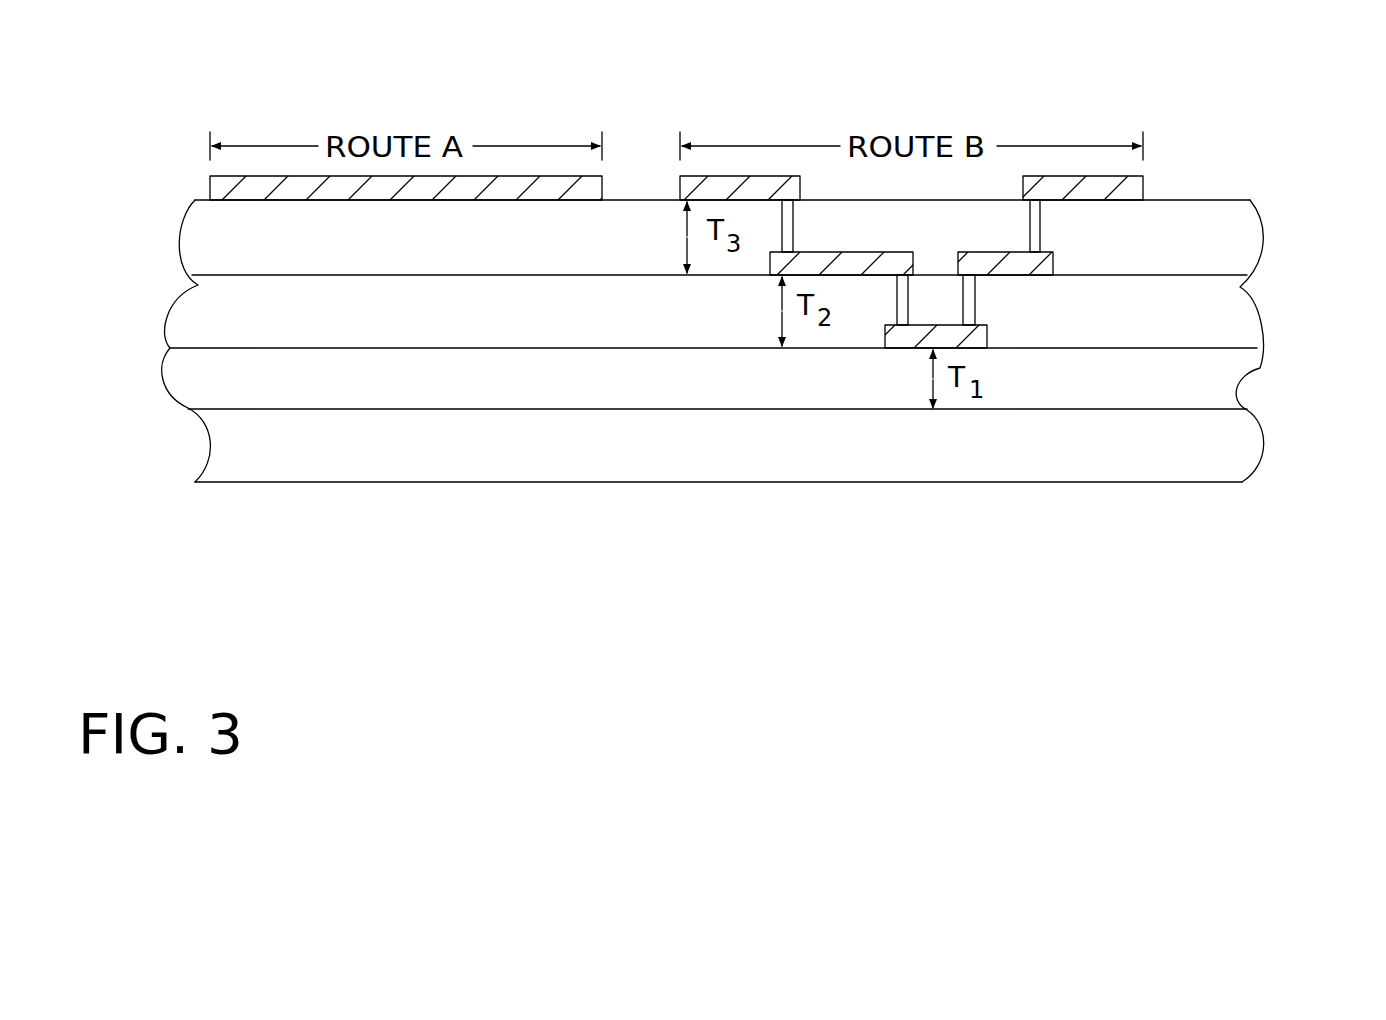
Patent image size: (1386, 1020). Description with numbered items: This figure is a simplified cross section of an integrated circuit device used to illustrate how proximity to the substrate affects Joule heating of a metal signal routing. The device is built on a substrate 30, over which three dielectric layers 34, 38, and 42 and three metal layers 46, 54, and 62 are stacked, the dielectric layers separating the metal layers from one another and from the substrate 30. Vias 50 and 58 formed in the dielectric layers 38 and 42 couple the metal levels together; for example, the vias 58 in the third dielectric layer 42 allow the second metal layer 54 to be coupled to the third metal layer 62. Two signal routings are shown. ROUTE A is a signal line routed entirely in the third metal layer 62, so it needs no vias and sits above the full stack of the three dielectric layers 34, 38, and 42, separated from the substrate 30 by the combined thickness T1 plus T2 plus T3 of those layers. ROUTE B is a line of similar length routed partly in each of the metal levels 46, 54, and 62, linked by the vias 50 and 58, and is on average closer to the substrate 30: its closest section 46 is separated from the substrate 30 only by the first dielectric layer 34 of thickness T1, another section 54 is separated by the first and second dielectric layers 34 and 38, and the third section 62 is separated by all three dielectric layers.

The substrate 30 is at (1210, 452).
The first dielectric layer 34 is at (1203, 380).
The second dielectric layer 38 is at (1197, 330).
The third dielectric layer 42 is at (1210, 220).
The first metal layer 46 is at (927, 350).
The vias 50 is at (970, 288).
The second metal layer 54 is at (783, 262).
The vias 58 is at (1043, 233).
The third metal layer 62 is at (243, 188).